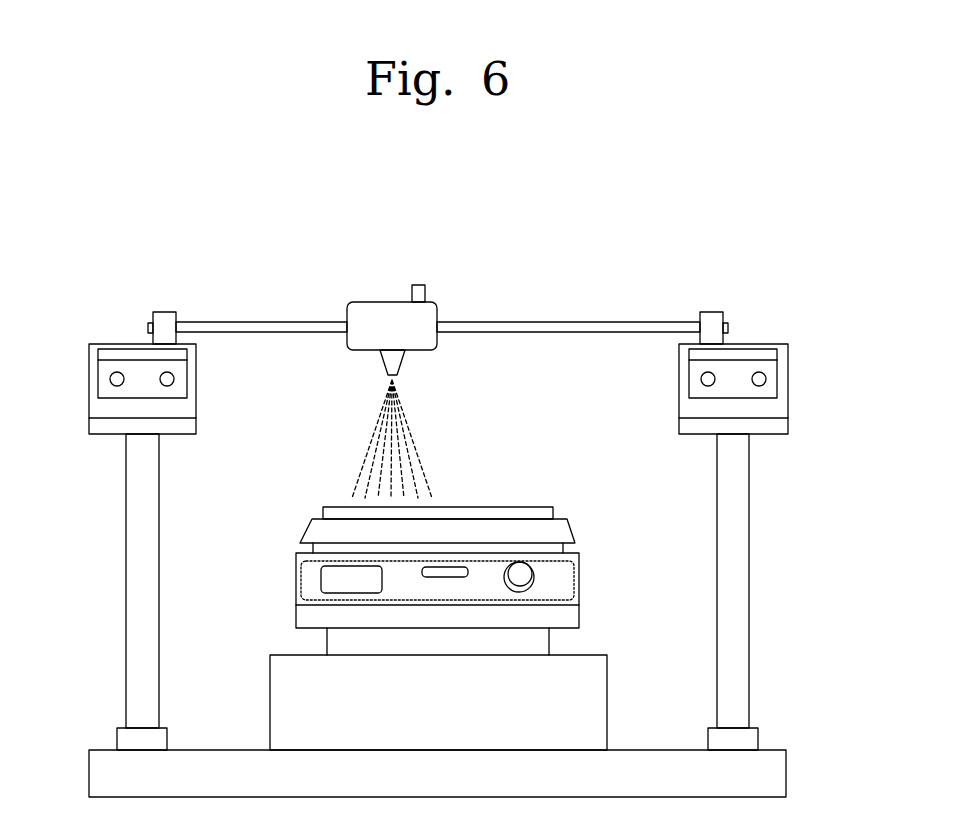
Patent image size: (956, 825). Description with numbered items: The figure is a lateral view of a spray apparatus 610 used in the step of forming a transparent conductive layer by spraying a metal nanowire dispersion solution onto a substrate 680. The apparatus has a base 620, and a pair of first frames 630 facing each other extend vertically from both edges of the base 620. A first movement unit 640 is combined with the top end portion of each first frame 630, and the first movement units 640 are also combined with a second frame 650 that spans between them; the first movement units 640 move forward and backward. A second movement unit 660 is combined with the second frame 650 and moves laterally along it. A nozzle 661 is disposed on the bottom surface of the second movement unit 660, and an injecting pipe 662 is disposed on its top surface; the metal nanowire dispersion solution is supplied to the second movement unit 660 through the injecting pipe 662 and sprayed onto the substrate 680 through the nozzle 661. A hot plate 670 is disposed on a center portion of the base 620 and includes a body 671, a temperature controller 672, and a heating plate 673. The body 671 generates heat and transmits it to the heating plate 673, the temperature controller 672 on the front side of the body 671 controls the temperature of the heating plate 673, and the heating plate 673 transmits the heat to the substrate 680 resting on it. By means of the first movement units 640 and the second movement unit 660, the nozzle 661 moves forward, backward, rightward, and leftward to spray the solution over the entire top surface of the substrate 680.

The coating apparatus 610 is at (104, 275).
The base 620 is at (786, 773).
The first frames 630 is at (126, 578).
The first movement units 640 is at (89, 386).
The second frame 650 is at (560, 322).
The second movement unit 660 is at (373, 302).
The nozzle 661 is at (402, 360).
The injecting pipe 662 is at (420, 285).
The hot plate 670 is at (436, 604).
The body 671 is at (579, 614).
The temperature controller 672 is at (528, 573).
The heating plate 673 is at (574, 528).
The substrate 680 is at (513, 507).